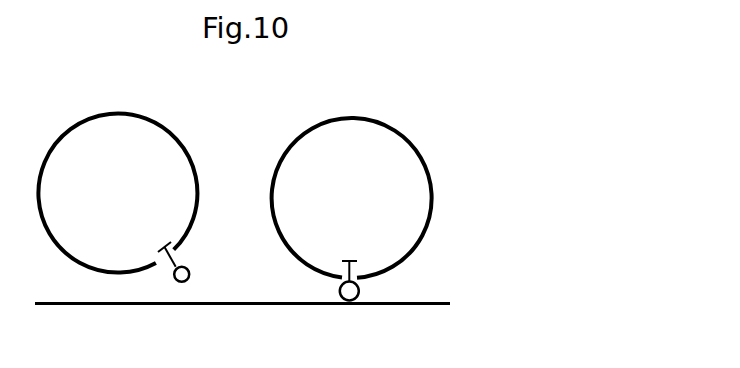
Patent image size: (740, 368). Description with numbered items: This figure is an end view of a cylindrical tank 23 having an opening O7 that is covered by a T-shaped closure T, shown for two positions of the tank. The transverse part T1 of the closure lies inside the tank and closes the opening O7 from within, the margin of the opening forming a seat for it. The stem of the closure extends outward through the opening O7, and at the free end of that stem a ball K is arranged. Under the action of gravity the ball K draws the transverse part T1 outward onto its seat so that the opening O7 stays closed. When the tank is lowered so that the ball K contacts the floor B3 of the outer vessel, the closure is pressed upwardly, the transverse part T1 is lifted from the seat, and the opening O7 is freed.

The tank 23 is at (272, 163).
The transverse part of the T closure T1 is at (344, 256).
The opening of the tank O7 is at (175, 259).
The ball K is at (188, 278).
The T-shaped closure T is at (162, 282).
The floor of the outer vessel B3 is at (425, 316).